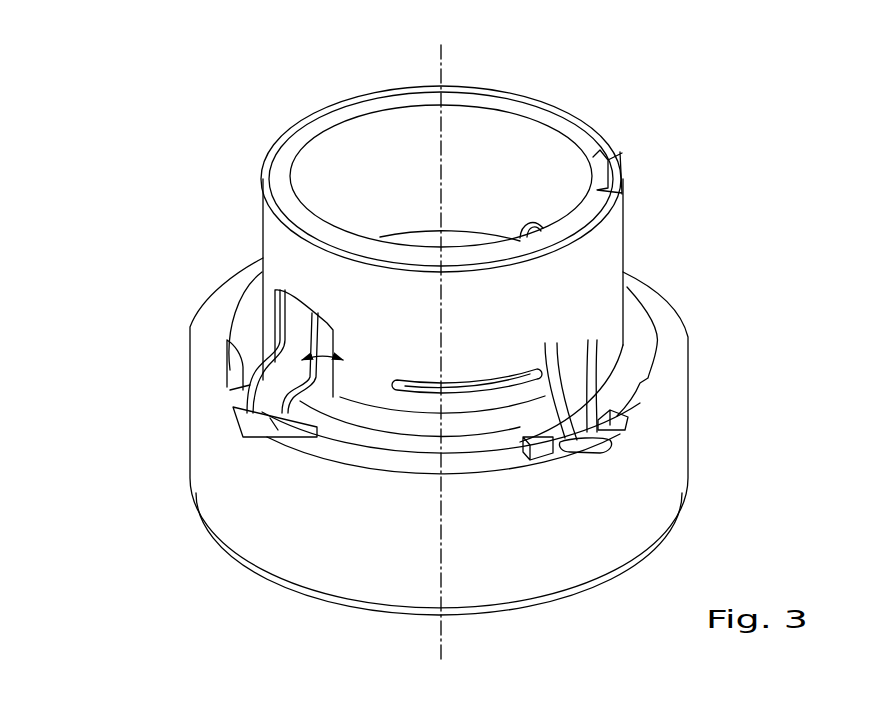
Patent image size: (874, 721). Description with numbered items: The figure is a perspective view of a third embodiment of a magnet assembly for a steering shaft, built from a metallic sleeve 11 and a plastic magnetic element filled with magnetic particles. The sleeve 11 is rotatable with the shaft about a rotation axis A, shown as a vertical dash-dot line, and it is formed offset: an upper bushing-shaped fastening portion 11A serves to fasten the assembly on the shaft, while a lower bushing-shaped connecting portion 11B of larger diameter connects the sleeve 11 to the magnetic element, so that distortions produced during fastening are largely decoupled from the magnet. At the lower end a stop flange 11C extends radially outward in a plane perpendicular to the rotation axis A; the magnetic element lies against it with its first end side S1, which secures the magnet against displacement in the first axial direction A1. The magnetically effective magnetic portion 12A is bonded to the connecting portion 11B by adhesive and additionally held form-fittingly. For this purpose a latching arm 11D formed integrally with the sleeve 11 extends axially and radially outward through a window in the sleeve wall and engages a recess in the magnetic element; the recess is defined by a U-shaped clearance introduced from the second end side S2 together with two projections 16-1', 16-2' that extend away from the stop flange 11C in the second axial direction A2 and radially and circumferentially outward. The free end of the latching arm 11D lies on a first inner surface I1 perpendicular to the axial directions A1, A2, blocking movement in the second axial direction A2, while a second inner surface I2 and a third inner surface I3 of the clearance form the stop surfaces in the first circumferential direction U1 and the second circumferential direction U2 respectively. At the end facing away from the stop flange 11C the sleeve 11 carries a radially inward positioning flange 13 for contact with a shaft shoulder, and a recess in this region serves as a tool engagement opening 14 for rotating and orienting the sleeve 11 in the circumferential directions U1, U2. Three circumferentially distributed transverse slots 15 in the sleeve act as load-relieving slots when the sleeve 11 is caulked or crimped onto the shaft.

The sleeve 11 is at (507, 125).
The fastening portion 11A is at (650, 243).
The connecting portion 11B is at (715, 372).
The stop flange 11C is at (368, 602).
The latching arm 11D is at (297, 327).
The magnetic portion 12A is at (138, 443).
The positioning flange 13 is at (565, 110).
The tool engagement opening 14 is at (640, 165).
The load-relieving slot 15 is at (421, 380).
The projection 16-1' is at (474, 514).
The projection 16-2' is at (343, 477).
The first inner surface I1 is at (232, 420).
The second inner surface I2 is at (589, 371).
The third inner surface I3 is at (240, 418).
The first end side S1 is at (306, 602).
The second end side S2 is at (684, 330).
The rotation axis A is at (445, 646).
The first axial direction A1 is at (130, 120).
The second axial direction A2 is at (130, 34).
The first circumferential direction U1 is at (441, 192).
The second circumferential direction U2 is at (441, 192).